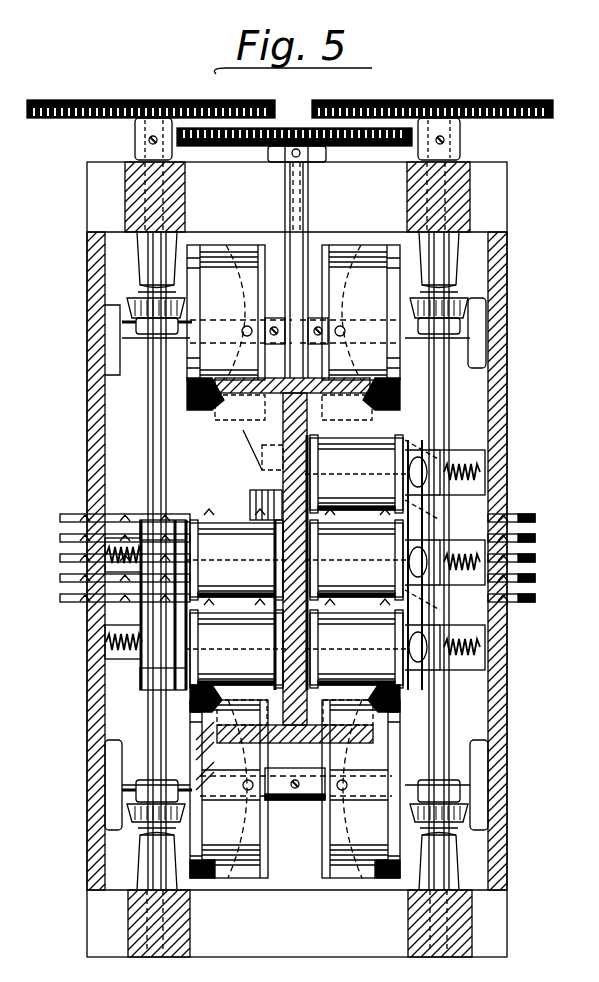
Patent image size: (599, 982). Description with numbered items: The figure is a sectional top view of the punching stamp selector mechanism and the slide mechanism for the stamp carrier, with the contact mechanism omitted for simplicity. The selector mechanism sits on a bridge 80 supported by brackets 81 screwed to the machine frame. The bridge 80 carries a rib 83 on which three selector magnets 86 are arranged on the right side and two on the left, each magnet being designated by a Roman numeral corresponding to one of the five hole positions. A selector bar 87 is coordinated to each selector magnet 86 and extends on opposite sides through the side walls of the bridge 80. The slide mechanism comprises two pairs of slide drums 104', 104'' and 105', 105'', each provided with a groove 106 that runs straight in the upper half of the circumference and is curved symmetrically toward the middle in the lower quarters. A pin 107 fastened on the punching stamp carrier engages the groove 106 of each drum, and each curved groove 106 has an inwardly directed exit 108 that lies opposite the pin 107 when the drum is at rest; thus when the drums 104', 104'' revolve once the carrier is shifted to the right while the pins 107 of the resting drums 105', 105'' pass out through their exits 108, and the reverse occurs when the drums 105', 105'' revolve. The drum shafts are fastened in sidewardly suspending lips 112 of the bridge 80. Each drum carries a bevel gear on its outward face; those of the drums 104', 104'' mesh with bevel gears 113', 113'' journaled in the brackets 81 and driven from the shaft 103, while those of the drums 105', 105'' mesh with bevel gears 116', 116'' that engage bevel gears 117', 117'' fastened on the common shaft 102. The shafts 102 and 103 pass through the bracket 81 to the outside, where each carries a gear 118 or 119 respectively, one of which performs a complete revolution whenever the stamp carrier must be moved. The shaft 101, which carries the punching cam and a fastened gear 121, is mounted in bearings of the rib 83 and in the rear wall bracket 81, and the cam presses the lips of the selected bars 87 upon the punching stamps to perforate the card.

The bridge 80 is at (92, 665).
The brackets 81 is at (470, 191).
The rib 83 is at (283, 432).
The selector magnets 86 is at (360, 462).
The selector bars 87 is at (60, 580).
The shaft 101 is at (306, 246).
The shaft 102 is at (153, 413).
The shaft 103 is at (446, 406).
The slide drum 104' is at (350, 315).
The slide drum 104'' is at (361, 797).
The slide drum 105' is at (239, 315).
The slide drum 105'' is at (253, 781).
The grooves 106 is at (208, 880).
The pins 107 is at (258, 800).
The exit 108 is at (332, 780).
The lips 112 is at (487, 360).
The bevel gear 113' is at (477, 285).
The bevel gear 113'' is at (479, 835).
The bevel gear 116' is at (108, 275).
The bevel gear 116'' is at (110, 847).
The bevel gear 117' is at (113, 340).
The bevel gear 117'' is at (113, 799).
The gear 118 is at (151, 130).
The gear 119 is at (432, 130).
The gear 121 is at (282, 130).